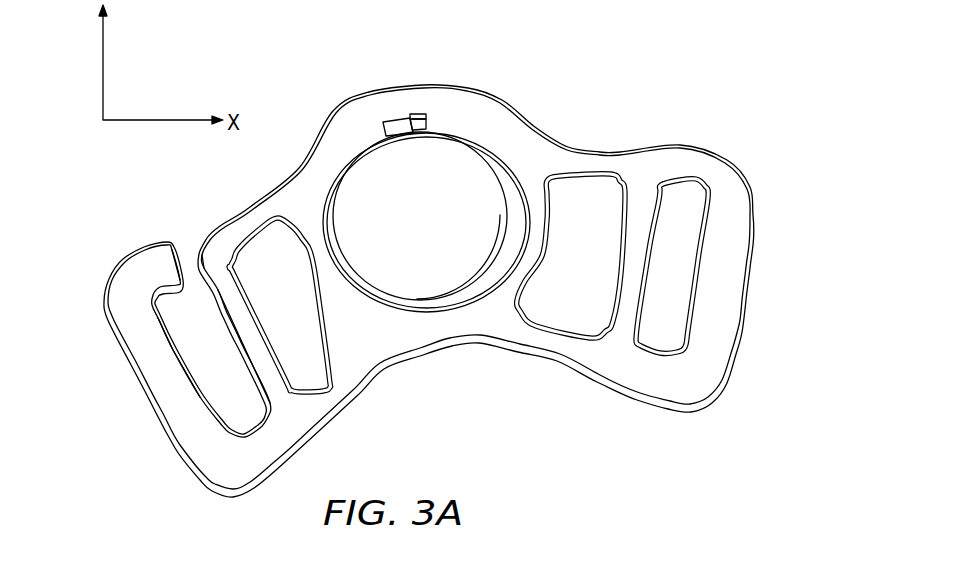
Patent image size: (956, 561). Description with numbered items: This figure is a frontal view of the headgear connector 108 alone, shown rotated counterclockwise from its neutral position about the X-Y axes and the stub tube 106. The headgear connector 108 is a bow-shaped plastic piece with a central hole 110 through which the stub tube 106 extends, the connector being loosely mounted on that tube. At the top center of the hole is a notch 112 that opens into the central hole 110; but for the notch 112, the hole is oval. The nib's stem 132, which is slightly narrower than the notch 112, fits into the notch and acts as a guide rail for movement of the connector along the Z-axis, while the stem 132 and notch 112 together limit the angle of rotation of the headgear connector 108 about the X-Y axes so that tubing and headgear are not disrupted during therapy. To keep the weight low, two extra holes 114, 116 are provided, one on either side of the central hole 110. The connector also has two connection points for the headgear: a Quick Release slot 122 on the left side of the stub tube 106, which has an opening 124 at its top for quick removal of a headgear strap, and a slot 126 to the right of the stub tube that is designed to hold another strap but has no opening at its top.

The stub tube 106 is at (411, 108).
The headgear connector 108 is at (727, 253).
The central hole 110 is at (504, 168).
The notch 112 is at (427, 116).
The extra hole 114 is at (292, 268).
The extra hole 116 is at (584, 205).
The Quick Release slot 122 is at (195, 352).
The opening 124 is at (187, 238).
The slot 126 is at (690, 318).
The stem 132 is at (409, 116).